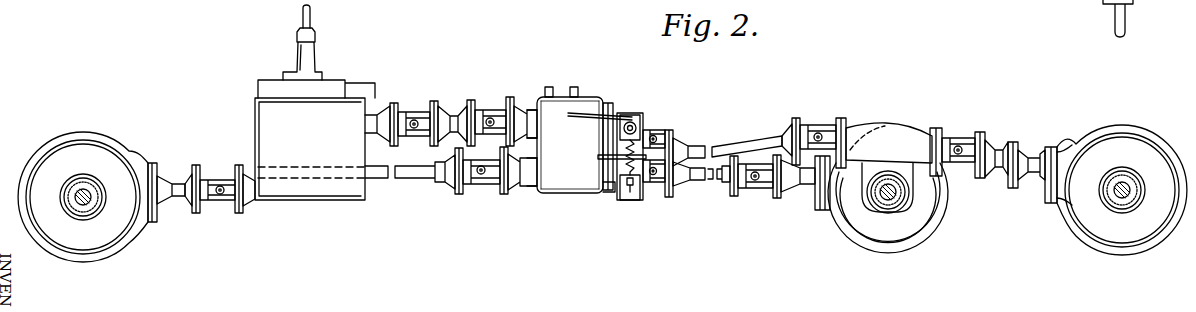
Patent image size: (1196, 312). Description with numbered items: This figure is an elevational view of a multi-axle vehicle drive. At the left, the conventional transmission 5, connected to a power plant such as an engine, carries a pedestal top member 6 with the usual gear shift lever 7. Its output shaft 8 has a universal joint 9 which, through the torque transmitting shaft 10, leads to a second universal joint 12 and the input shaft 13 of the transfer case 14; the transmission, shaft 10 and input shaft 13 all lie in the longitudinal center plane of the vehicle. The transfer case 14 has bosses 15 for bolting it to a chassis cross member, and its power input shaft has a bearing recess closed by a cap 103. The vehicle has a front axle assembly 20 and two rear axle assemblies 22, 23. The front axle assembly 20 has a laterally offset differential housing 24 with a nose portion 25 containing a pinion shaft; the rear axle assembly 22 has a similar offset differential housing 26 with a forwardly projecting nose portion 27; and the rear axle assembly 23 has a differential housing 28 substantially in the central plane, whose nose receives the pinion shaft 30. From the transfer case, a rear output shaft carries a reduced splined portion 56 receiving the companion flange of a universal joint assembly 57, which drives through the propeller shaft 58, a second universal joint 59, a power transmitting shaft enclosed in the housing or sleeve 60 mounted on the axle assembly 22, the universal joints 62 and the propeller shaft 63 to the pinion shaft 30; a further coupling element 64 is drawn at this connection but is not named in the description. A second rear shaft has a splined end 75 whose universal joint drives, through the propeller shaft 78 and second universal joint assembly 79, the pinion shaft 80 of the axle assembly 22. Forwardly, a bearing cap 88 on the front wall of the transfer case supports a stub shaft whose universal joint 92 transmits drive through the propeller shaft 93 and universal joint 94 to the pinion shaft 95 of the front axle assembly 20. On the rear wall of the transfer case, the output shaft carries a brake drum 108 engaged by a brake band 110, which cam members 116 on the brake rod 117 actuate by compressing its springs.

The transmission 5 is at (320, 200).
The pedestal top member 6 is at (292, 58).
The gear shift lever 7 is at (312, 10).
The output shaft 8 is at (386, 108).
The universal joint 9 is at (403, 116).
The torque transmitting shaft 10 is at (445, 108).
The second universal joint 12 is at (486, 108).
The input shaft 13 is at (522, 104).
The transfer case 14 is at (600, 98).
The bosses 15 is at (552, 86).
The front axle assembly 20 is at (90, 213).
The rear axle assembly 22 is at (880, 206).
The rear axle assembly 23 is at (1112, 206).
The differential housing 24 is at (120, 148).
The nose portion 25 is at (160, 218).
The differential housing 26 is at (922, 228).
The nose portion 27 is at (818, 202).
The differential housing 28 is at (1128, 240).
The pinion shaft 30 is at (1042, 185).
The reduced splined portion 56 is at (600, 186).
The universal joint assembly 57 is at (662, 136).
The propeller shaft 58 is at (722, 146).
The second universal joint 59 is at (815, 124).
The housing or sleeve 60 is at (860, 127).
The universal joints 62 is at (962, 136).
The propeller shaft 63 is at (996, 148).
The coupling 64 is at (1034, 152).
The splined end 75 is at (622, 185).
The propeller shaft 78 is at (712, 182).
The second universal joint assembly 79 is at (752, 196).
The pinion shaft 80 is at (790, 190).
The bearing cap 88 is at (518, 188).
The universal joint 92 is at (478, 188).
The propeller shaft 93 is at (398, 180).
The universal joint 94 is at (210, 200).
The pinion shaft 95 is at (165, 180).
The cap 103 is at (612, 112).
The brake drum 108 is at (652, 186).
The brake band 110 is at (630, 195).
The cam members 116 is at (640, 120).
The brake rod 117 is at (610, 118).